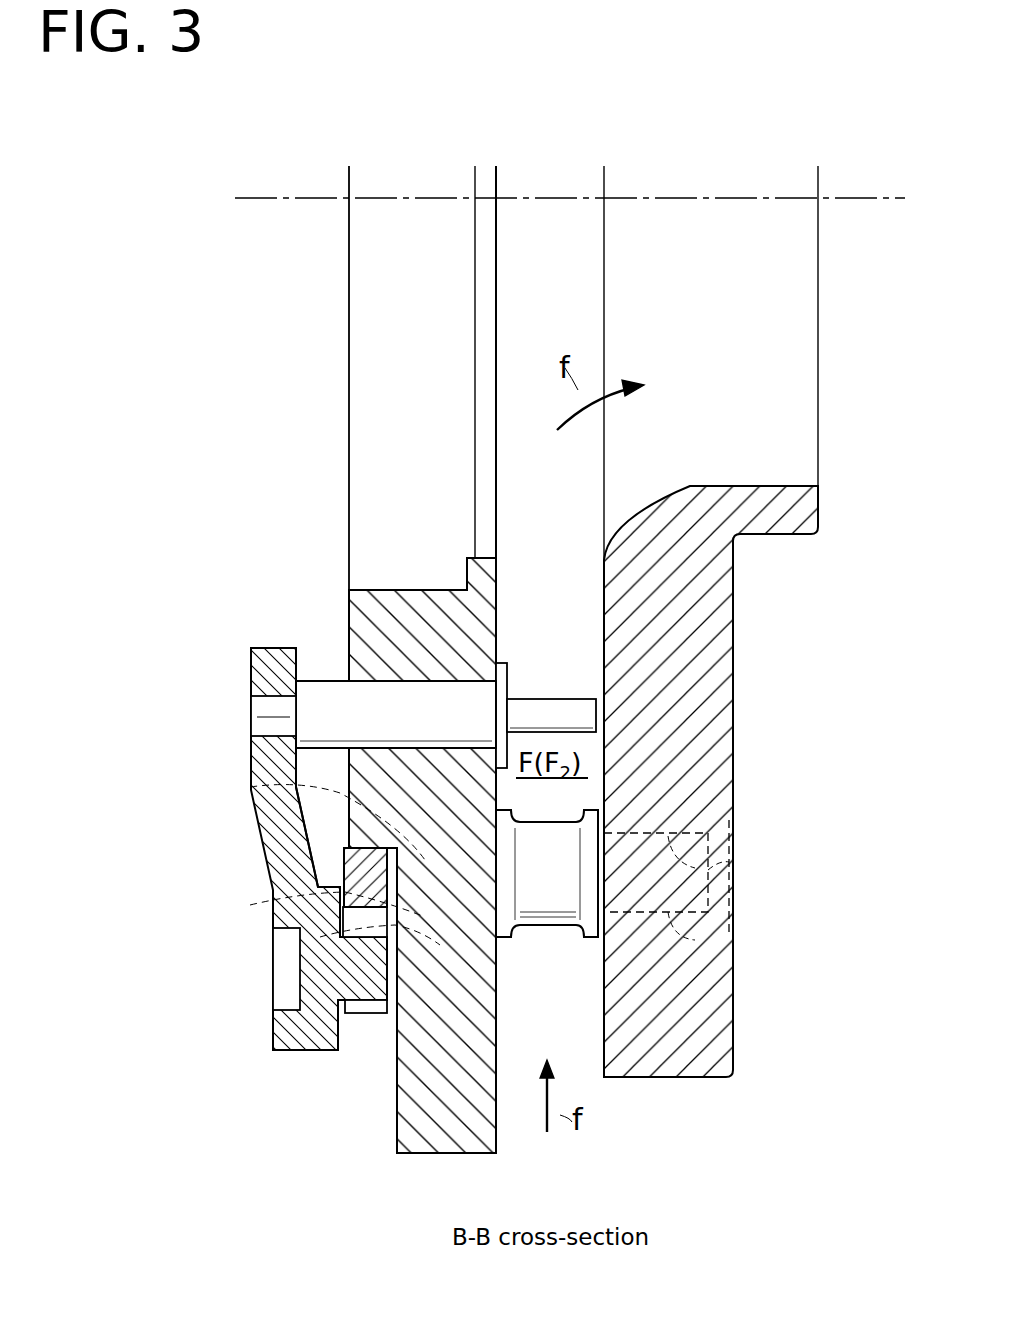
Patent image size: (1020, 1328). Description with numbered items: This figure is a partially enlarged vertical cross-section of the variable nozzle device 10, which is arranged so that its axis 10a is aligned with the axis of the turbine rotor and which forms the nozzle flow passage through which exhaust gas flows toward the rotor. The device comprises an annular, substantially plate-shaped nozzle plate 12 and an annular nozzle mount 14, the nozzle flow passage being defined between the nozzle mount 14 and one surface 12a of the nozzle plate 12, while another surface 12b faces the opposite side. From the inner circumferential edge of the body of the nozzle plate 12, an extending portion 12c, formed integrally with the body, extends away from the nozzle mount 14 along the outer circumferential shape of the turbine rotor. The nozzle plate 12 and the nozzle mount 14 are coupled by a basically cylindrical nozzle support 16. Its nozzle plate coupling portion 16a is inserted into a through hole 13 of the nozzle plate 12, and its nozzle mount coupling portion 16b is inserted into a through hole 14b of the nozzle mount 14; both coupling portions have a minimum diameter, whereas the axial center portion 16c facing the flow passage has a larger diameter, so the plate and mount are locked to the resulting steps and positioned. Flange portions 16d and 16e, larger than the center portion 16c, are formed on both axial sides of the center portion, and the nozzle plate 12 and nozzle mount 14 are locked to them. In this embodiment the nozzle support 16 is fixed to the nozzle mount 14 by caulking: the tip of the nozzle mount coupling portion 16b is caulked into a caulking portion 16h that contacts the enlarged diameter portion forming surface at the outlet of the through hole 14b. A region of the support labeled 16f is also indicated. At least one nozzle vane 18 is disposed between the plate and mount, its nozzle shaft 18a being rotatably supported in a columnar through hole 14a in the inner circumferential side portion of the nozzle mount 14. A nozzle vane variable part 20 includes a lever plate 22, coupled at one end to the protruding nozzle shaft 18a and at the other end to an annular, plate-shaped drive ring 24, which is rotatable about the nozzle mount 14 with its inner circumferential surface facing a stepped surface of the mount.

The variable nozzle device 10 is at (212, 503).
The axis 10a is at (297, 200).
The nozzle plate 12 is at (733, 640).
The one surface 12a is at (603, 593).
The another surface 12b is at (733, 684).
The extending portion 12c is at (757, 522).
The through hole 13 is at (735, 857).
The nozzle mount 14 is at (397, 1105).
The columnar through hole 14a is at (381, 683).
The through hole 14b is at (345, 792).
The nozzle support 16 is at (523, 937).
The nozzle plate coupling portion 16a is at (700, 948).
The nozzle mount coupling portion 16b is at (335, 905).
The axial center portion 16c is at (549, 900).
The flange portion 16d is at (588, 806).
The flange portion 16e is at (513, 809).
The seal ring portion 16f is at (725, 882).
The caulking portion 16h is at (345, 848).
The nozzle vane 18 is at (526, 697).
The nozzle shaft 18a is at (322, 681).
The nozzle vane variable part 20 is at (187, 1008).
The lever plate 22 is at (273, 1030).
The drive ring 24 is at (367, 1015).